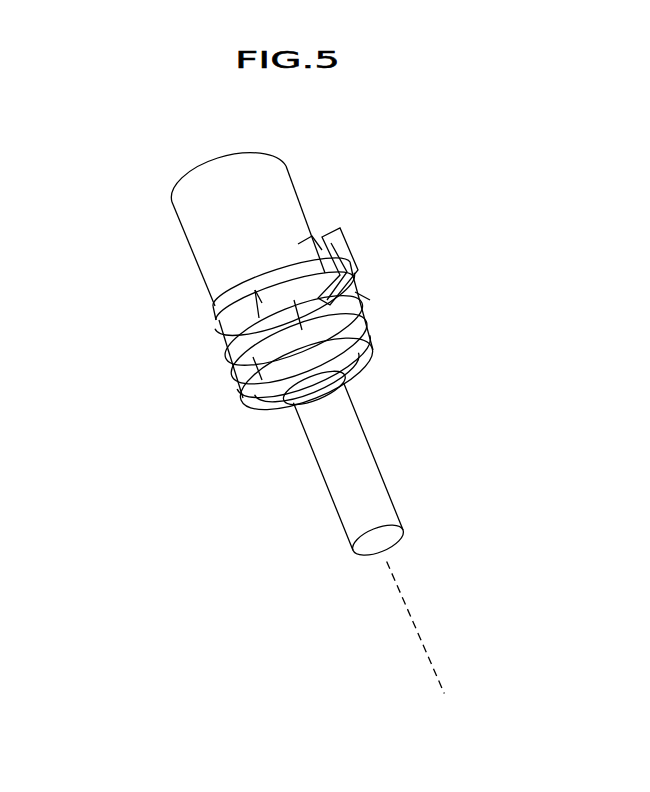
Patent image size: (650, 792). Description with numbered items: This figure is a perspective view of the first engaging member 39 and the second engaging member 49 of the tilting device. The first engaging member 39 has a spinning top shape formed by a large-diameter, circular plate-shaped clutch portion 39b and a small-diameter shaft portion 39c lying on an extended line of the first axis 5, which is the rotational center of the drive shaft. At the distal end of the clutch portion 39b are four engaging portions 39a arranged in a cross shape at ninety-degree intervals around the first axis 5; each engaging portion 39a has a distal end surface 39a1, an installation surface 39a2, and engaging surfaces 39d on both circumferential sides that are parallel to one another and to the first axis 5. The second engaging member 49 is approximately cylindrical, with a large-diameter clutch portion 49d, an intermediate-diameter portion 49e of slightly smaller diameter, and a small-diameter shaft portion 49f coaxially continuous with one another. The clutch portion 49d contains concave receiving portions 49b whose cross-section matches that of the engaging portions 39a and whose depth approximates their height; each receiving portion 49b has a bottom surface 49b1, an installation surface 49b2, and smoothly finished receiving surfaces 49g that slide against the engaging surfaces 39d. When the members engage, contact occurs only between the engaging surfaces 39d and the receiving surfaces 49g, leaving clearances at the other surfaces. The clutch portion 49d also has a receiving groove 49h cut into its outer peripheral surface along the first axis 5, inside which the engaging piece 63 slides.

The first axis 5 is at (407, 603).
The first engaging member 39 is at (304, 403).
The engaging portions 39a is at (343, 305).
The distal end surfaces 39a1 is at (362, 345).
The installation surfaces 39a2 is at (355, 318).
The clutch portion 39b is at (268, 386).
The shaft portion 39c is at (330, 479).
The engaging surfaces 39d is at (362, 296).
The second engaging member 49 is at (253, 264).
The receiving portions 49b is at (263, 266).
The bottom surfaces 49b1 is at (262, 303).
The installation surfaces 49b2 is at (253, 357).
The clutch portion 49d is at (238, 354).
The intermediate-diameter portion 49e is at (225, 342).
The shaft portion 49f is at (287, 168).
The receiving surfaces 49g is at (240, 303).
The receiving groove 49h is at (316, 250).
The engaging piece 63 is at (352, 240).